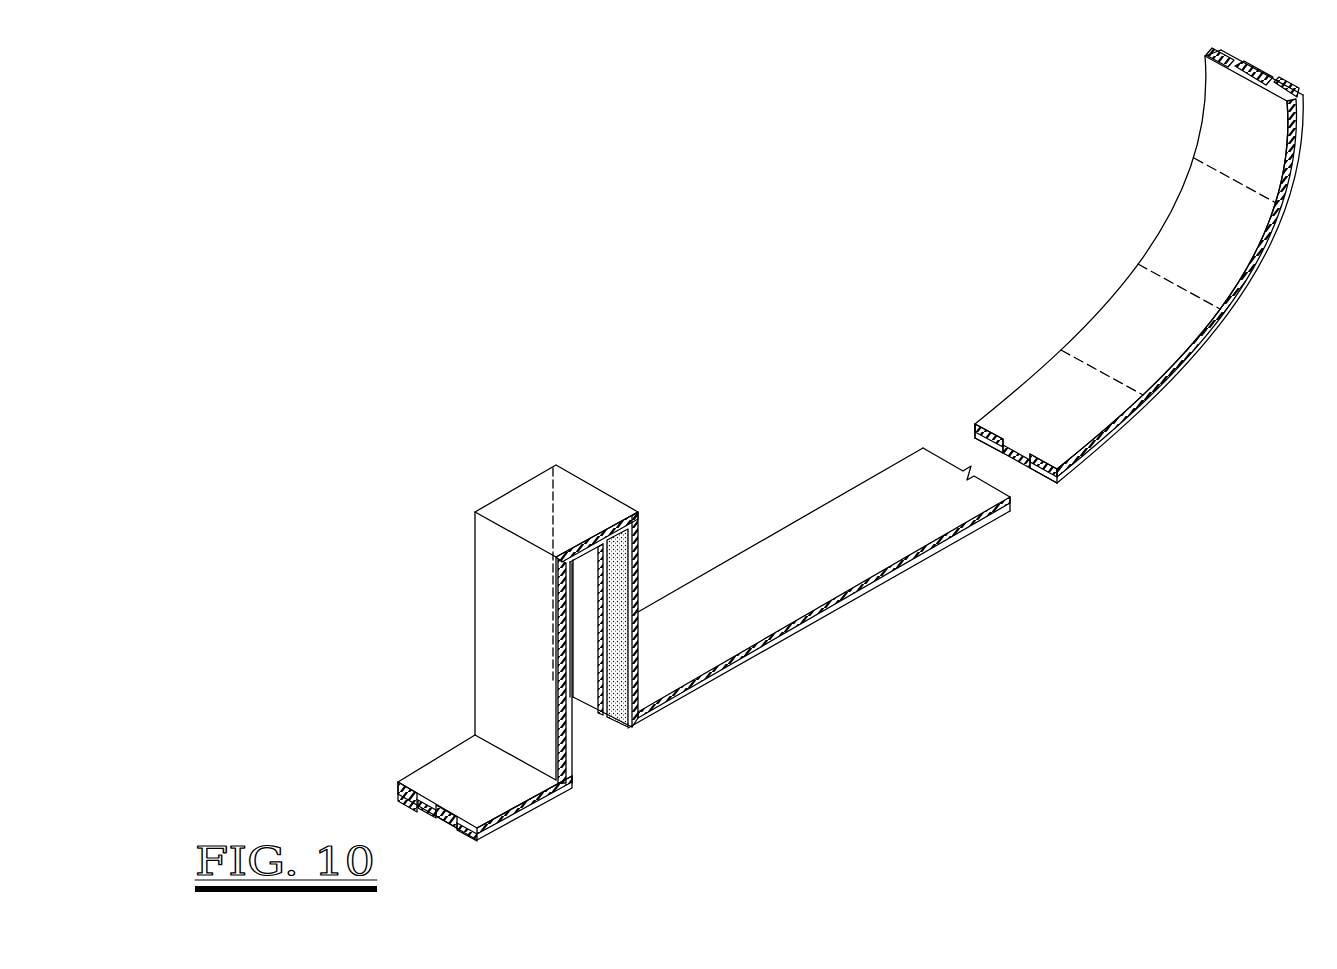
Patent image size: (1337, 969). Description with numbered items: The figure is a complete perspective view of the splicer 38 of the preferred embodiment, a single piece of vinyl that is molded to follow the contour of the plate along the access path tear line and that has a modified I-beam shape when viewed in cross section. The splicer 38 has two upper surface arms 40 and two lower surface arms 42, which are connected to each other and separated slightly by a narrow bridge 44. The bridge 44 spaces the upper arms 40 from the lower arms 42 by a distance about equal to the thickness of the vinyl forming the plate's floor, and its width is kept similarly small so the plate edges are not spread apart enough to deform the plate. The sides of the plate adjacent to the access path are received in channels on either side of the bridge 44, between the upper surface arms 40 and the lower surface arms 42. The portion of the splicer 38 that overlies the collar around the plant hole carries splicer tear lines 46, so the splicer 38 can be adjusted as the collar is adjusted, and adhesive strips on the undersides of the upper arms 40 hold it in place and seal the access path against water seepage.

The splicer 38 is at (1141, 267).
The upper surface arms 40 is at (994, 420).
The lower surface arms 42 is at (1004, 447).
The bridge 44 is at (1010, 449).
The splicer tear lines 46 is at (1266, 205).